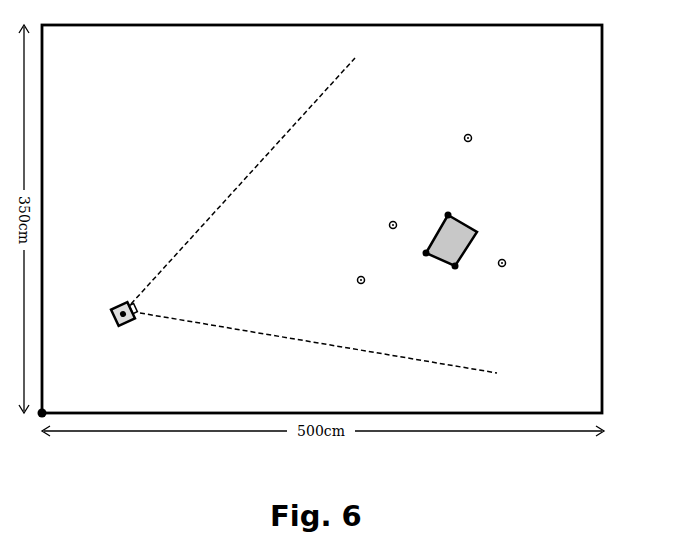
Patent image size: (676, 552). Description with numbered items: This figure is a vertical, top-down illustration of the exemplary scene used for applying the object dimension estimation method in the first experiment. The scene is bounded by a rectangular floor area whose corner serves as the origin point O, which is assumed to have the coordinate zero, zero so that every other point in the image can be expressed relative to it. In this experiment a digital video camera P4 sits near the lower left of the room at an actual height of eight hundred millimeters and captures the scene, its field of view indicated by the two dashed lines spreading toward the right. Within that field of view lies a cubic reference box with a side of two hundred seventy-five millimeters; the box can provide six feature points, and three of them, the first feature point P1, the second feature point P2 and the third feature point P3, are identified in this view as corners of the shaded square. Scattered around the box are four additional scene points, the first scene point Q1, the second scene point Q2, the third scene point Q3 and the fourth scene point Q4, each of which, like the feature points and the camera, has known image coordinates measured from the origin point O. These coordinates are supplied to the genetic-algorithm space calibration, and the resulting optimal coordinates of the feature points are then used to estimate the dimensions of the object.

The origin point O is at (53, 402).
The first feature point P1 is at (454, 203).
The second feature point P2 is at (423, 265).
The third feature point P3 is at (464, 281).
The digital video camera P4 is at (124, 326).
The first scene point Q1 is at (487, 138).
The second scene point Q2 is at (396, 209).
The third scene point Q3 is at (519, 265).
The fourth scene point Q4 is at (368, 295).